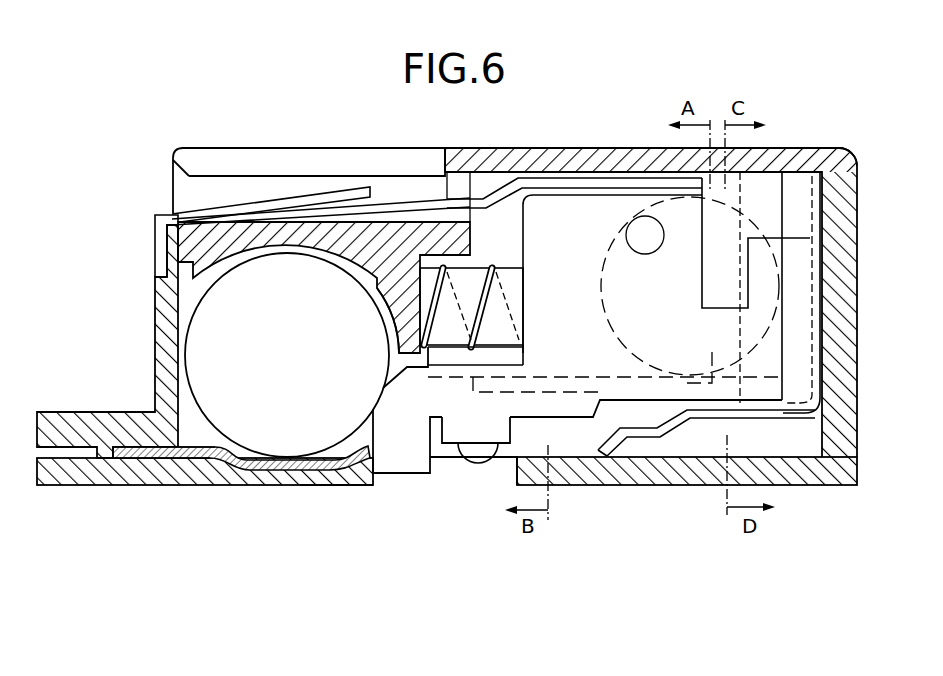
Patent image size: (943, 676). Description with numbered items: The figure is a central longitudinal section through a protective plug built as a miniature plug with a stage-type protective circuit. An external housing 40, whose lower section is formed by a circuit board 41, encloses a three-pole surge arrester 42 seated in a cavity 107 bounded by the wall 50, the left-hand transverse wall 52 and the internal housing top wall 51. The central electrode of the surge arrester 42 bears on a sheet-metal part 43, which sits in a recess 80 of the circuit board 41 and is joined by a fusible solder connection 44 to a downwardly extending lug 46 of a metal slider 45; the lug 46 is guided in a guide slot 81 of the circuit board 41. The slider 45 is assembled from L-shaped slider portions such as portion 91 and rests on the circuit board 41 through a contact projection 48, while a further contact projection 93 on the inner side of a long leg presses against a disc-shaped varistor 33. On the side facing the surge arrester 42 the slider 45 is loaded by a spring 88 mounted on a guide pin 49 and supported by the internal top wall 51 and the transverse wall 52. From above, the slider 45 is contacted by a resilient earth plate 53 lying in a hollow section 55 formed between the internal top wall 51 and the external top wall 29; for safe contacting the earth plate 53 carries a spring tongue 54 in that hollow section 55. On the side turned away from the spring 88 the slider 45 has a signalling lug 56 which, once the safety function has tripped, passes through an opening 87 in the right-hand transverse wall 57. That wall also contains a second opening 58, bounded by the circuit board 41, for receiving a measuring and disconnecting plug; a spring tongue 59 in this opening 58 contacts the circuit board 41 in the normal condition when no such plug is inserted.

The external top wall 29 is at (215, 153).
The hollow section 55 is at (205, 193).
The internal housing top wall 51 is at (297, 232).
The spring tongue 54 is at (343, 198).
The earth plate 53 is at (400, 207).
The external housing 40 is at (466, 165).
The metal slider 45 is at (579, 205).
The contact projection 93 is at (652, 236).
The right-hand transverse wall 57 is at (847, 147).
The varistor 33 is at (720, 220).
The opening 87 is at (825, 317).
The signalling lug 56 is at (795, 353).
The guide pin 49 is at (515, 268).
The spring 88 is at (490, 298).
The wall 50 is at (388, 292).
The left-hand transverse wall 52 is at (162, 320).
The three-pole surge arrester 42 is at (197, 353).
The circuit board 41 is at (118, 475).
The cavity 107 is at (188, 470).
The sheet-metal part 43 is at (263, 473).
The recess 80 is at (328, 473).
The solder connection 44 is at (367, 473).
The lug 46 is at (407, 475).
The contact projection 48 is at (478, 460).
The guide slot 81 is at (493, 473).
The L-shaped metal slider portion 91 is at (505, 444).
The spring tongue 59 is at (707, 420).
The opening 58 is at (800, 440).